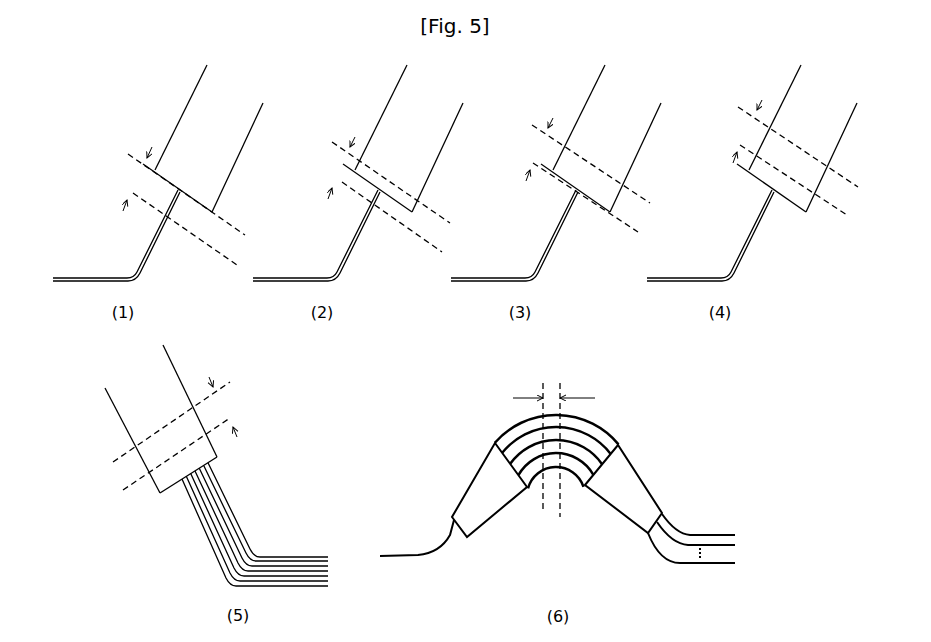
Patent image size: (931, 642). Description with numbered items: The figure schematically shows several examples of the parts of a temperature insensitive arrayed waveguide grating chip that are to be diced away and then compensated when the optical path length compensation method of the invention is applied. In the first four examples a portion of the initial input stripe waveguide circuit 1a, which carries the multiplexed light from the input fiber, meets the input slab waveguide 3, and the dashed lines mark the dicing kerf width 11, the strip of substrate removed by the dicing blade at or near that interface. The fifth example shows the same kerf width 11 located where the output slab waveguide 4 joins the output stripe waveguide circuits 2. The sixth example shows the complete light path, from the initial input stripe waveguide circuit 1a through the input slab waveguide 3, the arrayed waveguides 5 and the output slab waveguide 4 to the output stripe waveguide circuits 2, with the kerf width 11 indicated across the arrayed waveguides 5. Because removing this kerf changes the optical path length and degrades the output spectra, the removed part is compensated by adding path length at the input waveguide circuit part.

The initial input stripe waveguide circuit 1a is at (123, 278).
The output stripe waveguide circuits 2 is at (248, 560).
The input slab waveguide 3 is at (193, 117).
The output slab waveguide 4 is at (165, 380).
The arrayed waveguides 5 is at (593, 433).
The dicing kerf width 11 is at (135, 177).